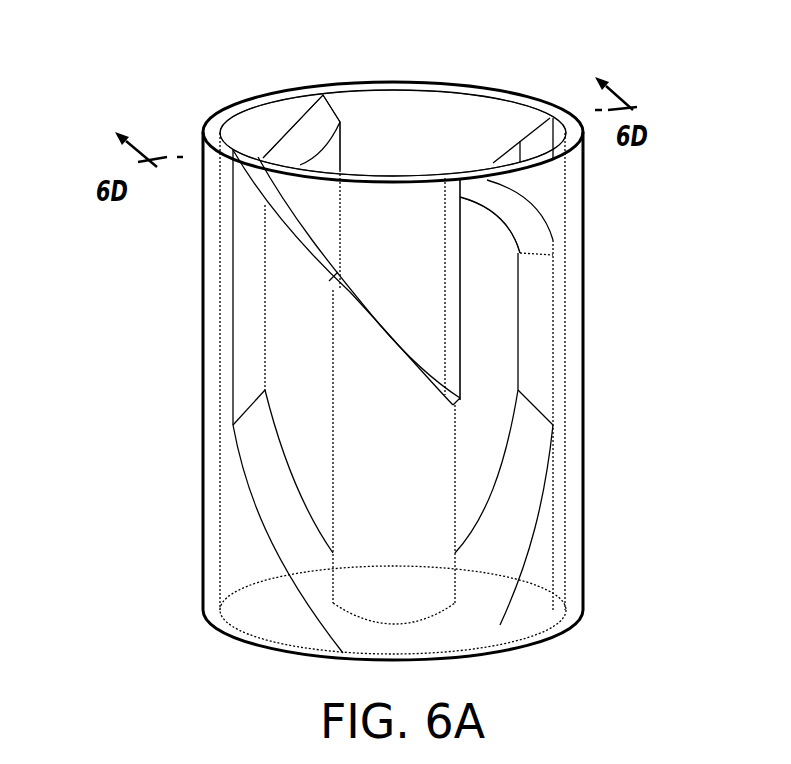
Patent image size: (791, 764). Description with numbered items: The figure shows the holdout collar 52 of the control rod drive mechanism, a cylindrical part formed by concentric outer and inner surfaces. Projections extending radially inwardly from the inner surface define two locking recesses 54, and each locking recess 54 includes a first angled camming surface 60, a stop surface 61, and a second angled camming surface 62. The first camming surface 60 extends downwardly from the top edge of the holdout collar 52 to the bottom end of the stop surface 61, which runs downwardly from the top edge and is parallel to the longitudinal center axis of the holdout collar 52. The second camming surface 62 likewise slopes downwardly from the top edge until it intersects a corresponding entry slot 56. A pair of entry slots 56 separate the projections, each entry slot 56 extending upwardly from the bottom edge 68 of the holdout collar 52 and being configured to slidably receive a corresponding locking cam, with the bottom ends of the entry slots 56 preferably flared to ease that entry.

The holdout collar 52 is at (165, 99).
The locking recess 54 is at (419, 118).
The entry slot 56 is at (532, 610).
The first angled camming surface 60 is at (506, 148).
The stop surface 61 is at (343, 162).
The second angled camming surface 62 is at (293, 137).
The bottom edge 68 is at (251, 647).